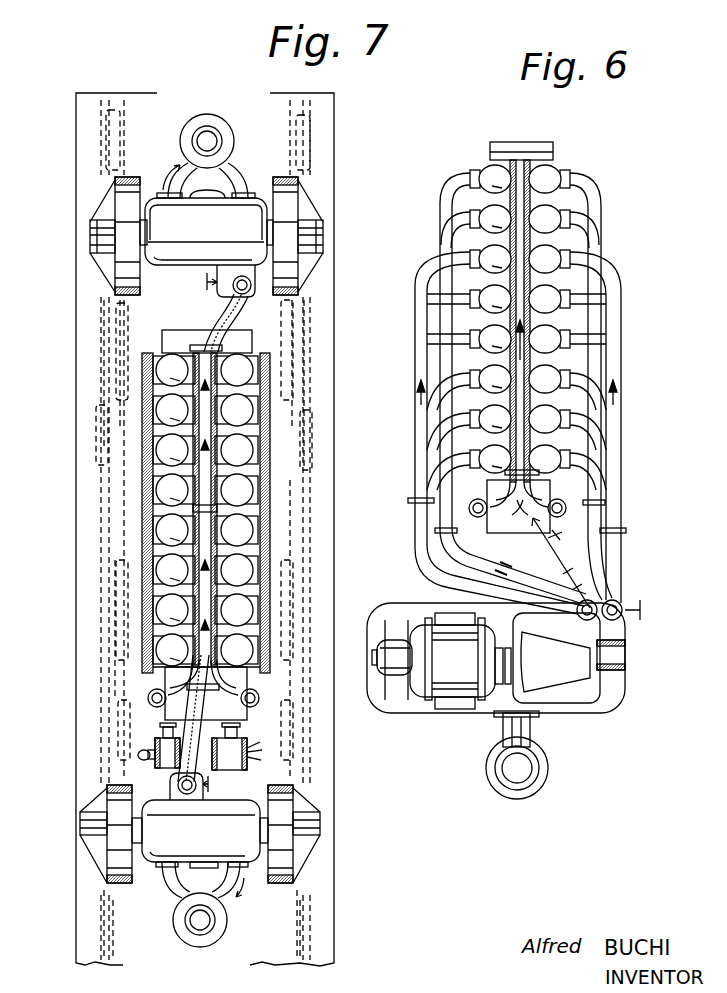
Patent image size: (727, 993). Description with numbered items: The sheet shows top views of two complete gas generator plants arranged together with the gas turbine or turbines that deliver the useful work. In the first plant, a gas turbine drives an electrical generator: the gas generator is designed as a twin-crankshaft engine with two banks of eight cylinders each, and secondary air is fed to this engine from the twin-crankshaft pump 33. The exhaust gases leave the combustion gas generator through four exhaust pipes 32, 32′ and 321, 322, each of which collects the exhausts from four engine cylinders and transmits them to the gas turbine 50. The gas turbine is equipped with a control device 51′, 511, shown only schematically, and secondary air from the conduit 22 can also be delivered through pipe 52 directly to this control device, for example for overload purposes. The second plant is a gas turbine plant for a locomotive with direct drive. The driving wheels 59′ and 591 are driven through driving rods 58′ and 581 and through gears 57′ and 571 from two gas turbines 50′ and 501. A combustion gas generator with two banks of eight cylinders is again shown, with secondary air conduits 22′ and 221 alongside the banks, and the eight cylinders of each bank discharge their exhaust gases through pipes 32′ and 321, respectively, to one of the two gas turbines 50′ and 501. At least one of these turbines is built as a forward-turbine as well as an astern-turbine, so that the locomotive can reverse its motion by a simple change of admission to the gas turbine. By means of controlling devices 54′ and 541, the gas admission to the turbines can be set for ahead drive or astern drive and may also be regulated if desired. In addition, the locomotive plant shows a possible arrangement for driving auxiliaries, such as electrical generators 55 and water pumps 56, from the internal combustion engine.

In FIG. 6, the conduit 22 is at (520, 177).
In FIG. 7, the conduit 22′ is at (147, 415).
In FIG. 7, the conduit 221 is at (263, 467).
In FIG. 6, the exhaust pipe 32 is at (428, 549).
In FIG. 7, the exhaust pipe 32′ is at (222, 317).
In FIG. 6, the exhaust pipe 32′ is at (477, 545).
In FIG. 7, the exhaust pipe 321 is at (203, 668).
In FIG. 6, the exhaust pipe 321 is at (612, 543).
In FIG. 6, the exhaust pipe 322 is at (600, 573).
In FIG. 7, the twin-crankshaft pump 33 is at (170, 711).
In FIG. 6, the twin-crankshaft pump 33 is at (540, 485).
In FIG. 6, the gas turbine 50 is at (557, 685).
In FIG. 7, the gas turbine 50′ is at (196, 250).
In FIG. 7, the gas turbine 501 is at (158, 833).
In FIG. 6, the control device 51′ is at (556, 578).
In FIG. 6, the control device 511 is at (640, 613).
In FIG. 6, the pipe 52 is at (555, 535).
In FIG. 7, the controlling device 54′ is at (207, 283).
In FIG. 7, the controlling device 541 is at (210, 786).
In FIG. 7, the electrical generator 55 is at (248, 753).
In FIG. 7, the water pump 56 is at (174, 746).
In FIG. 7, the gear 57′ is at (122, 247).
In FIG. 7, the gear 571 is at (350, 822).
In FIG. 7, the driving rod 58′ is at (105, 330).
In FIG. 7, the driving rod 581 is at (350, 886).
In FIG. 7, the driving wheel 59′ is at (120, 320).
In FIG. 7, the driving wheel 591 is at (352, 935).